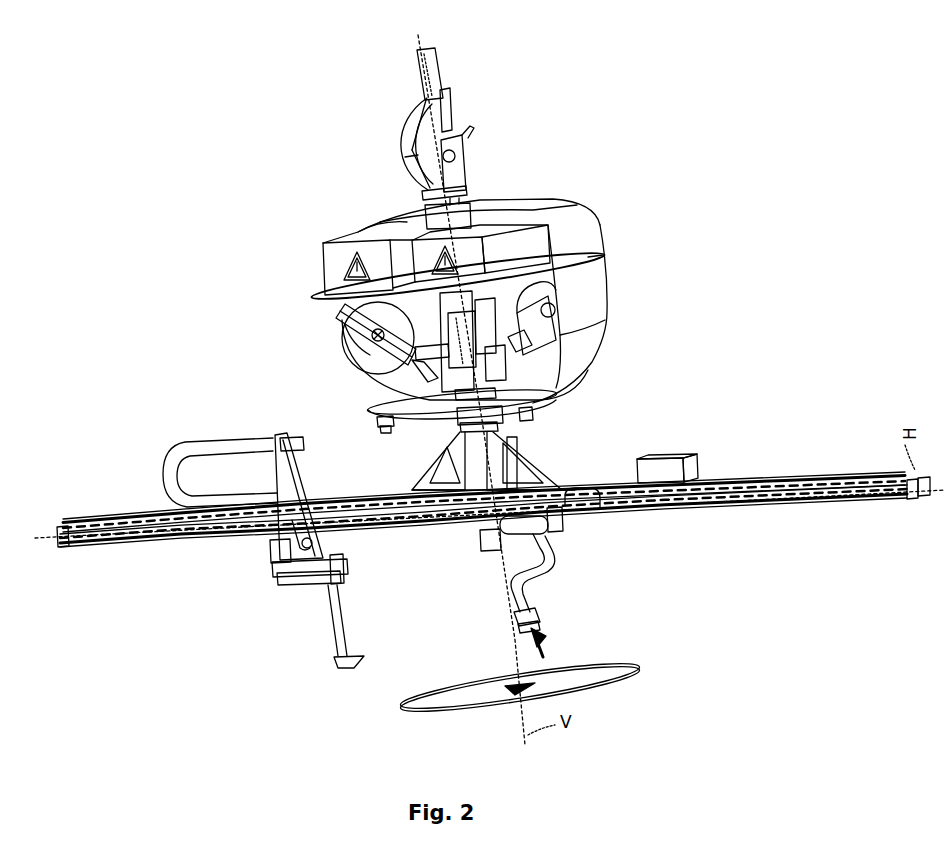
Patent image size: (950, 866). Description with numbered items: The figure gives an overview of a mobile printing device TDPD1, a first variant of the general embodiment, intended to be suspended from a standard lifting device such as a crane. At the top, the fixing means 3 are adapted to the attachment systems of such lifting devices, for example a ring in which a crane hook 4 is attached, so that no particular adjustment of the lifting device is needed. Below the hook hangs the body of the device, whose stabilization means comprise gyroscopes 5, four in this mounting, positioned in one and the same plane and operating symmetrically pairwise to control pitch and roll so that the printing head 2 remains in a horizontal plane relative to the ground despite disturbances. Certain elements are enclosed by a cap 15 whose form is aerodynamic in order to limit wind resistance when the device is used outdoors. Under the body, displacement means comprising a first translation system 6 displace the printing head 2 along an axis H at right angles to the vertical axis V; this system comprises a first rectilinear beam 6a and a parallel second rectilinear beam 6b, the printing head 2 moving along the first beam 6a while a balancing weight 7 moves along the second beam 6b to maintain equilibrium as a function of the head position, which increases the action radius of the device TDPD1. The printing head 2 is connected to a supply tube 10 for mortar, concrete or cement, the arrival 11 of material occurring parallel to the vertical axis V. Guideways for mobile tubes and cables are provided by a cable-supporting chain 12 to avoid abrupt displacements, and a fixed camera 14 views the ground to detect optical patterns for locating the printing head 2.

The printing head 2 is at (348, 620).
The fixing means 3 is at (470, 135).
The crane hook 4 is at (420, 122).
The gyroscopes 5 is at (346, 352).
The first translation system 6 is at (475, 530).
The first rectilinear beam 6a is at (86, 538).
The second rectilinear beam 6b is at (775, 496).
The balancing weight 7 is at (690, 466).
The supply tube 10 is at (552, 564).
The arrival of material 11 is at (552, 646).
The cable-supporting chain 12 is at (172, 452).
The camera 14 is at (368, 418).
The cap 15 is at (582, 250).
The mobile printing device TDPD1 is at (290, 266).